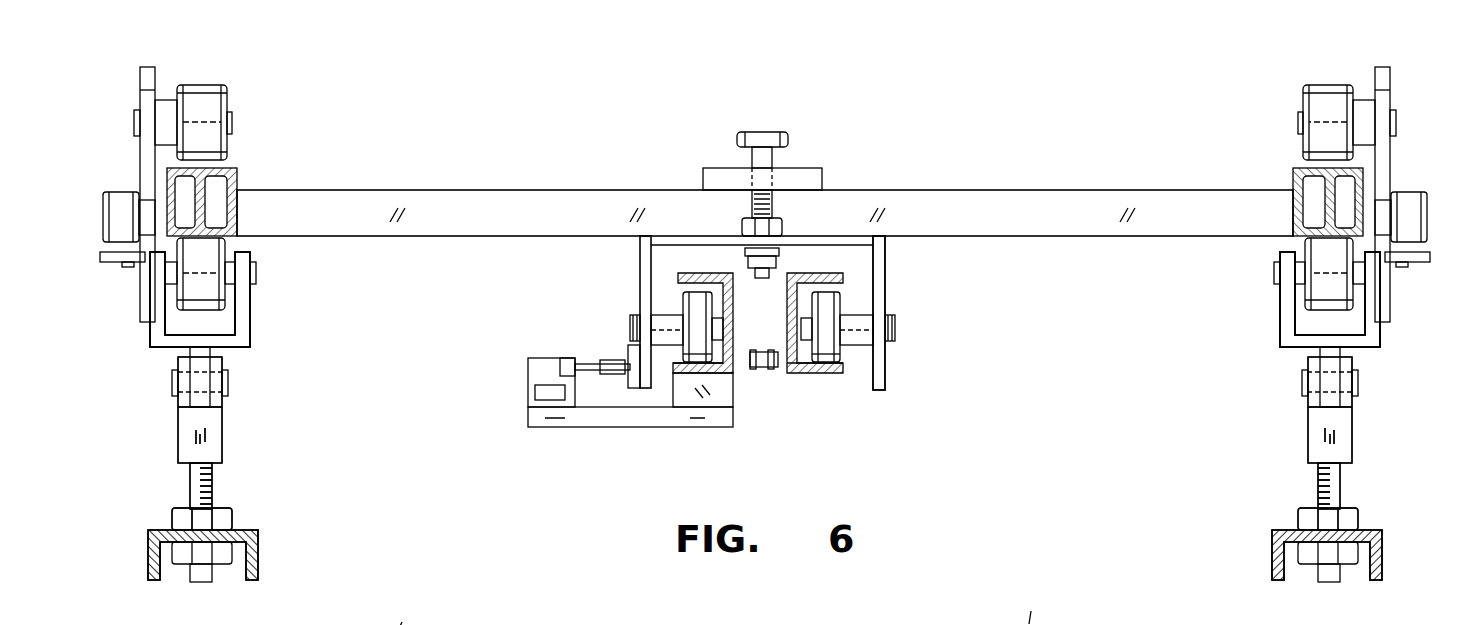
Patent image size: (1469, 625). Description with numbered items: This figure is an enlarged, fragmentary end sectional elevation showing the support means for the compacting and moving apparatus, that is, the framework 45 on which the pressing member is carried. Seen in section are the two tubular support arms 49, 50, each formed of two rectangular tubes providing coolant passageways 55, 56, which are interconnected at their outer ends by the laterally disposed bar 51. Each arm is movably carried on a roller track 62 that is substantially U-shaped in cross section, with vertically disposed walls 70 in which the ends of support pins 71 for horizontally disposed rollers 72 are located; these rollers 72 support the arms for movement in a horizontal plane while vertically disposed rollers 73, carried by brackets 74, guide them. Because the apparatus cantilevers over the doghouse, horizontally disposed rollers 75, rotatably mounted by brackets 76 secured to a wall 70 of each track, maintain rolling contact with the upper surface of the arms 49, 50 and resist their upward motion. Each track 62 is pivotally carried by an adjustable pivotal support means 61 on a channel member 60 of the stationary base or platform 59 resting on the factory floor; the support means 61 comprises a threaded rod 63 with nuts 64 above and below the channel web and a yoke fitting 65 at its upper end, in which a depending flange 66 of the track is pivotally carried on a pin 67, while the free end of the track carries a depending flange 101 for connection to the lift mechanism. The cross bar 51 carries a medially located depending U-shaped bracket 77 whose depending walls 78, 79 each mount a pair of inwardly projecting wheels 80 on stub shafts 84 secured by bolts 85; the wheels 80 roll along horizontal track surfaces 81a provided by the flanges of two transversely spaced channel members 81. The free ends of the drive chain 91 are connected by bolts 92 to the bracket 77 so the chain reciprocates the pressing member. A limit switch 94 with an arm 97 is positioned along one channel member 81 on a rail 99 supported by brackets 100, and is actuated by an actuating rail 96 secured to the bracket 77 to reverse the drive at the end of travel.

The framework 45 is at (305, 368).
The tubular support arm 49 is at (237, 192).
The tubular support arm 50 is at (1296, 190).
The laterally disposed bar 51 is at (985, 195).
The passageway 55 is at (185, 190).
The passageway 56 is at (215, 183).
The stationary base or platform 59 is at (273, 569).
The channel member 60 is at (150, 545).
The adjustable pivotal support means 61 is at (224, 494).
The roller track 62 is at (265, 334).
The threaded rod 63 is at (195, 478).
The nut 64 is at (232, 520).
The yoke fitting 65 is at (188, 437).
The depending flange 66 is at (205, 352).
The pin 67 is at (175, 385).
The vertically disposed wall 70 is at (243, 305).
The support pin 71 is at (256, 272).
The horizontally disposed roller 72 is at (218, 250).
The vertically disposed roller 73 is at (112, 215).
The bracket 74 is at (113, 260).
The horizontally disposed roller 75 is at (225, 90).
The bracket 76 is at (148, 72).
The U-shaped bracket 77 is at (898, 360).
The depending wall 78 is at (642, 262).
The depending wall 79 is at (885, 262).
The wheel 80 is at (710, 350).
The channel member 81 is at (738, 375).
The horizontal track surface 81a is at (675, 365).
The stub shaft 84 is at (672, 320).
The bolt 85 is at (635, 322).
The chain 91 is at (762, 370).
The bolt 92 is at (748, 230).
The limit switch 94 is at (535, 372).
The actuating rail 96 is at (637, 385).
The arm 97 is at (590, 365).
The rail 99 is at (533, 392).
The bracket 100 is at (587, 420).
The depending flange 101 is at (717, 605).